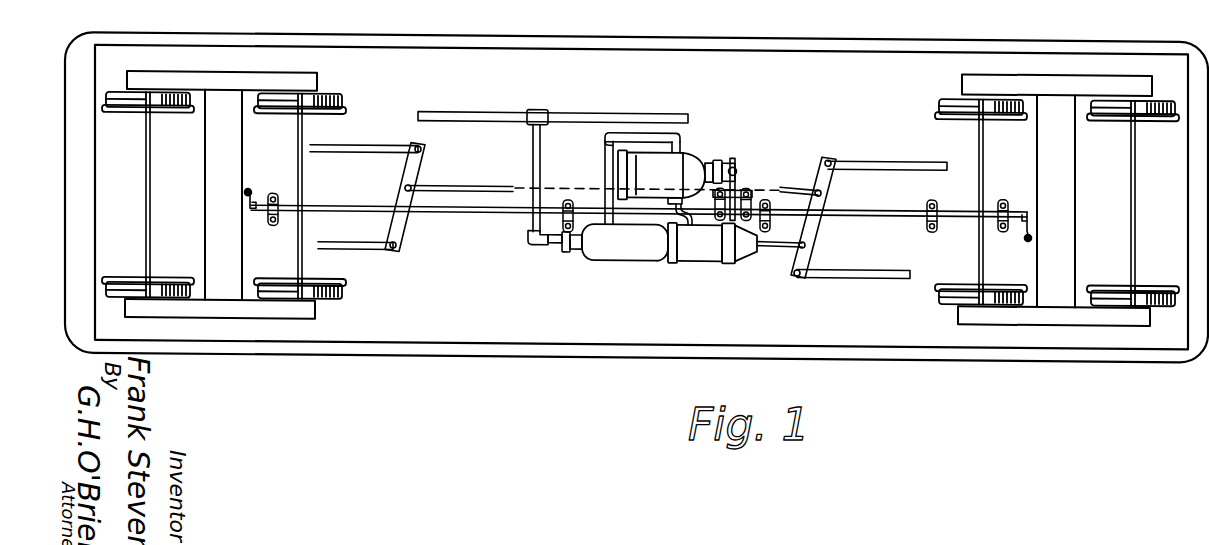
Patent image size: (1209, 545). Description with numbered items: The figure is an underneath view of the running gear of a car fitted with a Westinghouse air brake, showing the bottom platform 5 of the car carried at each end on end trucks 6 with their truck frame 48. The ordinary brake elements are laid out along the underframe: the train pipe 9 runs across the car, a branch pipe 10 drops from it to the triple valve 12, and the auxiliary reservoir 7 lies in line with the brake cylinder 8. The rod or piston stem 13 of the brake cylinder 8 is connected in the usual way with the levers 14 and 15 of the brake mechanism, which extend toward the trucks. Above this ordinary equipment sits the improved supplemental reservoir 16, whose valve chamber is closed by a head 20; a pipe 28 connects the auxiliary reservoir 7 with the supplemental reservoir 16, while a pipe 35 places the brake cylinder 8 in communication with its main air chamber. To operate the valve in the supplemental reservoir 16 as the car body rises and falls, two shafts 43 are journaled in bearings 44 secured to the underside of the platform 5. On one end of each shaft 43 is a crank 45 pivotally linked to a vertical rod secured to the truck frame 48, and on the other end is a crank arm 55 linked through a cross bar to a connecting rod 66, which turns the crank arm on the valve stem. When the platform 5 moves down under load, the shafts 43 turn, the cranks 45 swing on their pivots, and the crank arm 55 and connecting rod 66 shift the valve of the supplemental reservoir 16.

The bottom platform 5 is at (636, 197).
The end trucks 6 is at (640, 196).
The auxiliary reservoir 7 is at (629, 250).
The brake cylinder 8 is at (698, 252).
The train pipe 9 is at (485, 117).
The branch pipe 10 is at (541, 152).
The triple valve 12 is at (556, 243).
The piston stem 13 is at (775, 242).
The lever 14 is at (815, 218).
The lever 15 is at (407, 167).
The supplemental reservoir 16 is at (640, 160).
The head 20 is at (706, 165).
The pipe 28 is at (606, 163).
The pipe 35 is at (668, 196).
The shaft 43 is at (481, 209).
The bearings 44 is at (278, 192).
The crank 45 is at (261, 187).
The truck frame 48 is at (640, 198).
The crank arm 55 is at (750, 194).
The connecting rod 66 is at (738, 168).